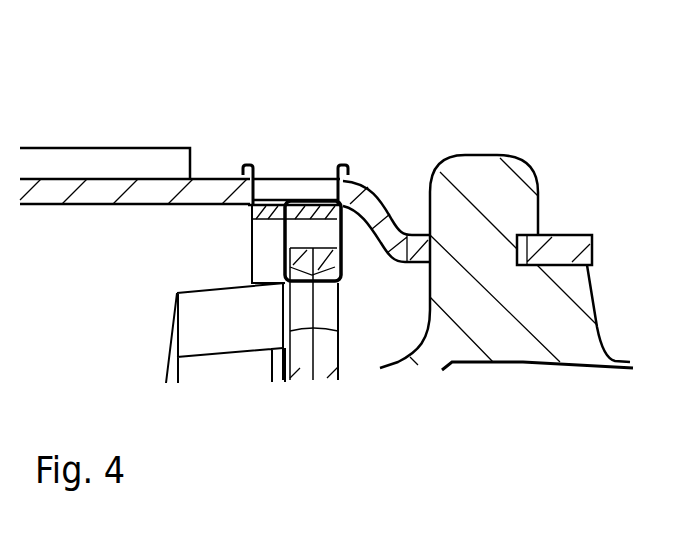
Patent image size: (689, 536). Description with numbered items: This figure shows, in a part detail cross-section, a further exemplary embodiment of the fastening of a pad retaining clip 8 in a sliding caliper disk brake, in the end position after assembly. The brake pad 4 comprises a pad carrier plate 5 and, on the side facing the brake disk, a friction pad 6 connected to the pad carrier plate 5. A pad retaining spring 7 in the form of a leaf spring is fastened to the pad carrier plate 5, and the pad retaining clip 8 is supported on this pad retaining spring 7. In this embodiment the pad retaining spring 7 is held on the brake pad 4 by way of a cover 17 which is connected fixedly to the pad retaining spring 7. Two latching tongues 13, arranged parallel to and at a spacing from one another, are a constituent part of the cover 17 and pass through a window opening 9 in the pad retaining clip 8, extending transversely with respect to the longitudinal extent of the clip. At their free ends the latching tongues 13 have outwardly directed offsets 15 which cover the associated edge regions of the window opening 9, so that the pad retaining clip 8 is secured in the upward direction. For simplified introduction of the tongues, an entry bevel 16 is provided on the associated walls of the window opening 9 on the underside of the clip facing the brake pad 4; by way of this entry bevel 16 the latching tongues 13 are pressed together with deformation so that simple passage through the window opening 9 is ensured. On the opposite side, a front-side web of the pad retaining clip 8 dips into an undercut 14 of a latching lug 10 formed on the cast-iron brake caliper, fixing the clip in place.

The brake pad 4 is at (210, 362).
The pad carrier plate 5 is at (332, 335).
The friction pad 6 is at (200, 368).
The pad retaining spring 7 is at (267, 265).
The pad retaining clip 8 is at (60, 209).
The window opening 9 is at (292, 177).
The latching lug 10 is at (477, 173).
The latching tongues 13 is at (252, 170).
The undercut 14 is at (523, 265).
The offsets 15 is at (245, 165).
The entry bevel 16 is at (245, 186).
The cover 17 is at (352, 268).